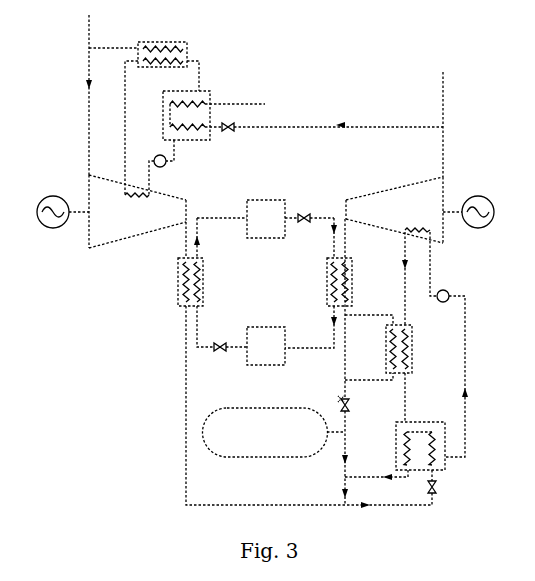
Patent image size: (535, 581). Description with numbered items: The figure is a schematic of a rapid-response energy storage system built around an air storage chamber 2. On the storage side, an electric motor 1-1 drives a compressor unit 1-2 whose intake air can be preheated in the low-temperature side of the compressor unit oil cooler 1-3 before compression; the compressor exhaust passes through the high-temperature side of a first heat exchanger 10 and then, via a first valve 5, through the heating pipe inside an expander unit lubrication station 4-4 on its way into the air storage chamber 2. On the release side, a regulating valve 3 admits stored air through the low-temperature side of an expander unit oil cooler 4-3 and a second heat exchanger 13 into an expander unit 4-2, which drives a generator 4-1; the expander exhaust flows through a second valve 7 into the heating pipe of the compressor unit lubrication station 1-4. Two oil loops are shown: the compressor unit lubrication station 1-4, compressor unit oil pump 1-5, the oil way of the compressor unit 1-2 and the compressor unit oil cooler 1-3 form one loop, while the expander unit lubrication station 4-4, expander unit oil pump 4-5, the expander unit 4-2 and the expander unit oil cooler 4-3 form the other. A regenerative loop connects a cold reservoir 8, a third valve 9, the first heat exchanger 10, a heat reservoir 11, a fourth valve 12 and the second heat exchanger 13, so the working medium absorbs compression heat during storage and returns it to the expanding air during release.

The electric motor 1-1 is at (42, 226).
The compressor unit 1-2 is at (97, 248).
The compressor unit oil cooler 1-3 is at (187, 56).
The compressor unit lubrication station 1-4 is at (210, 91).
The compressor unit oil pump 1-5 is at (166, 165).
The air storage chamber 2 is at (252, 458).
The regulating valve 3 is at (350, 402).
The generator 4-1 is at (492, 205).
The expander unit 4-2 is at (390, 188).
The expander unit oil cooler 4-3 is at (432, 338).
The expander unit lubrication station 4-4 is at (443, 470).
The expander unit oil pump 4-5 is at (462, 280).
The first valve 5 is at (437, 497).
The second valve 7 is at (236, 130).
The cold reservoir 8 is at (268, 327).
The third valve 9 is at (220, 352).
The first heat exchanger 10 is at (178, 280).
The heat reservoir 11 is at (270, 238).
The fourth valve 12 is at (304, 216).
The second heat exchanger 13 is at (352, 283).